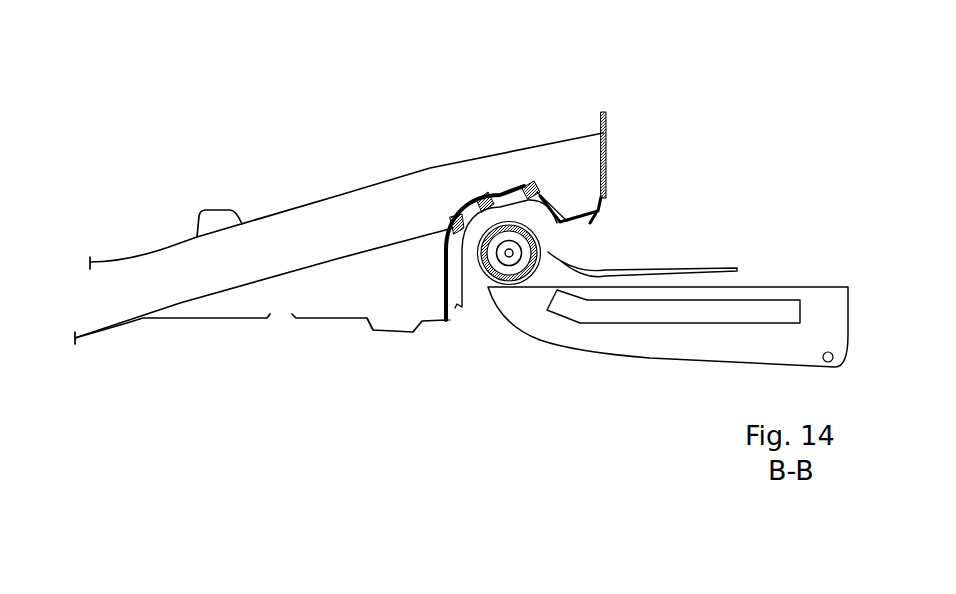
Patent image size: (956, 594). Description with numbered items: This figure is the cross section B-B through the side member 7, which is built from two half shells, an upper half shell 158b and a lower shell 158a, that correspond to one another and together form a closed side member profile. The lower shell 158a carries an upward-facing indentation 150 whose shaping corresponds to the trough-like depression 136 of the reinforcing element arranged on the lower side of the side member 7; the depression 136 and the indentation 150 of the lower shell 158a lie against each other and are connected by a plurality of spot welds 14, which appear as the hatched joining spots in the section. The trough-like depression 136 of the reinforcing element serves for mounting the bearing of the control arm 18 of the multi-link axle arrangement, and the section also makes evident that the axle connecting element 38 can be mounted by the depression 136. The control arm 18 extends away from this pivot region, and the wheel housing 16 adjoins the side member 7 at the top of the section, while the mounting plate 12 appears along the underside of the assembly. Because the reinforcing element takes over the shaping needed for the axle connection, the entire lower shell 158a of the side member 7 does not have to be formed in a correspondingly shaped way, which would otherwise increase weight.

The side member 7 is at (459, 68).
The mounting plate 12 is at (332, 319).
The spot welds 14 is at (485, 195).
The wheel housing 16 is at (606, 153).
The control arm 18 is at (708, 303).
The axle connecting element 38 is at (460, 297).
The trough-like depression 136 is at (507, 190).
The indentation 150 is at (507, 190).
The lower shell 158a is at (343, 257).
The upper half shell 158b is at (400, 178).